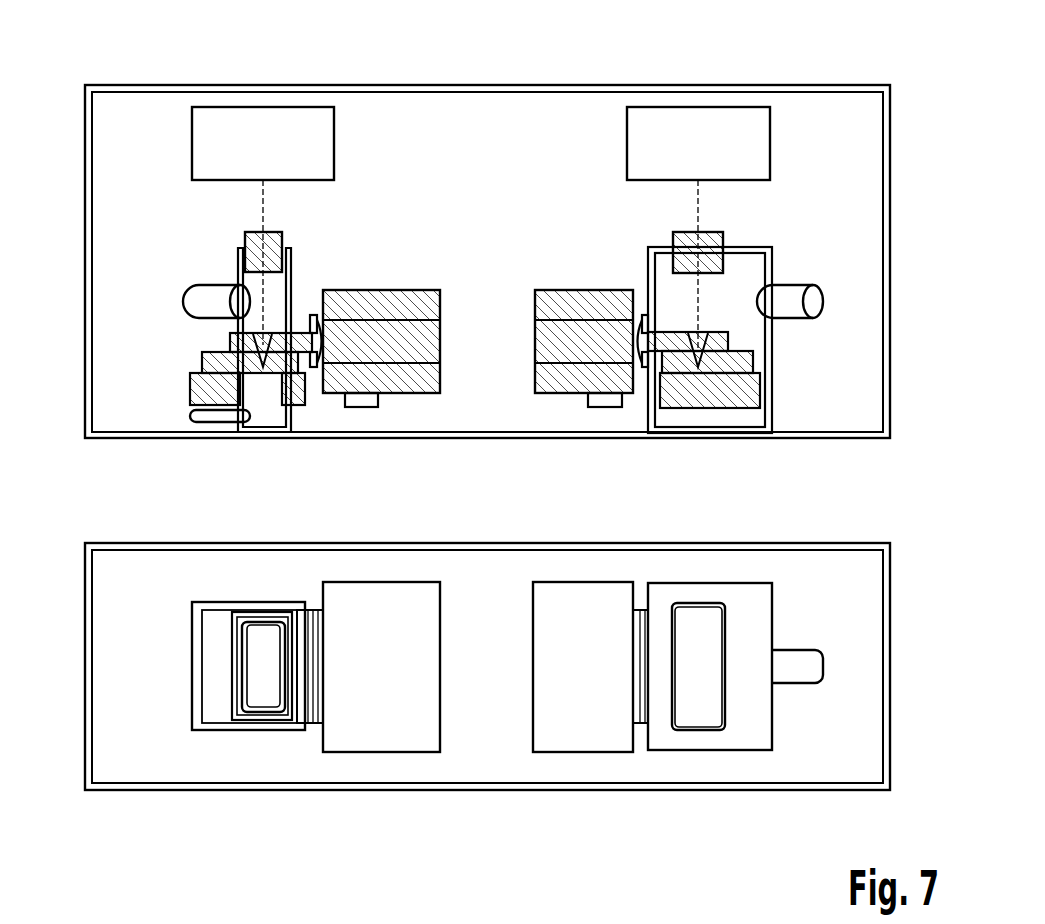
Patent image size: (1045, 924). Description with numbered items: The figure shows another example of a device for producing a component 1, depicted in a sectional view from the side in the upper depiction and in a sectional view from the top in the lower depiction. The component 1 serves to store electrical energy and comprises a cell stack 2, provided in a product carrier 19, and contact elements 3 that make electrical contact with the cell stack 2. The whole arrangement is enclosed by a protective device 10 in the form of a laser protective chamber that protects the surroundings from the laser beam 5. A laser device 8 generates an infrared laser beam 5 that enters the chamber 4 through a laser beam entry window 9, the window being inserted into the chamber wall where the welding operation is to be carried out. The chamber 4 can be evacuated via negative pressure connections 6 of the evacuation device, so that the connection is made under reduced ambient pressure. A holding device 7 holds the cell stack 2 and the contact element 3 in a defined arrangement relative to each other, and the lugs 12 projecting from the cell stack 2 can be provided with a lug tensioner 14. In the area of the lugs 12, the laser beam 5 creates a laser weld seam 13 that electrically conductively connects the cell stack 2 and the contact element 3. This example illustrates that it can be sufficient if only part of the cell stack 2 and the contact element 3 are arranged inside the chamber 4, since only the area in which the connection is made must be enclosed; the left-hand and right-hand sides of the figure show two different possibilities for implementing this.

The component 1 is at (472, 521).
The cell stack 2 is at (472, 521).
The contact element 3 is at (205, 360).
The chamber 4 is at (238, 255).
The laser beam 5 is at (263, 197).
The negative pressure connection 6 is at (183, 302).
The holding device 7 is at (213, 398).
The laser device 8 is at (262, 107).
The laser beam entry window 9 is at (250, 238).
The protective device 10 is at (148, 85).
The lug 12 is at (238, 336).
The laser weld seam 13 is at (270, 362).
The lug tensioner 14 is at (316, 366).
The product carrier 19 is at (397, 385).